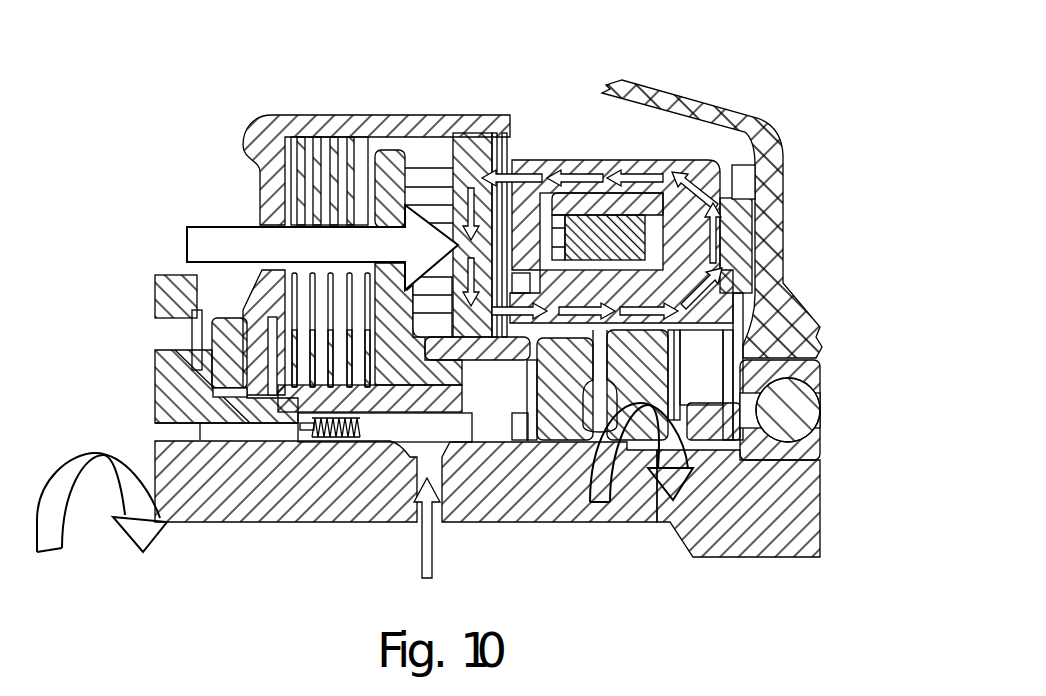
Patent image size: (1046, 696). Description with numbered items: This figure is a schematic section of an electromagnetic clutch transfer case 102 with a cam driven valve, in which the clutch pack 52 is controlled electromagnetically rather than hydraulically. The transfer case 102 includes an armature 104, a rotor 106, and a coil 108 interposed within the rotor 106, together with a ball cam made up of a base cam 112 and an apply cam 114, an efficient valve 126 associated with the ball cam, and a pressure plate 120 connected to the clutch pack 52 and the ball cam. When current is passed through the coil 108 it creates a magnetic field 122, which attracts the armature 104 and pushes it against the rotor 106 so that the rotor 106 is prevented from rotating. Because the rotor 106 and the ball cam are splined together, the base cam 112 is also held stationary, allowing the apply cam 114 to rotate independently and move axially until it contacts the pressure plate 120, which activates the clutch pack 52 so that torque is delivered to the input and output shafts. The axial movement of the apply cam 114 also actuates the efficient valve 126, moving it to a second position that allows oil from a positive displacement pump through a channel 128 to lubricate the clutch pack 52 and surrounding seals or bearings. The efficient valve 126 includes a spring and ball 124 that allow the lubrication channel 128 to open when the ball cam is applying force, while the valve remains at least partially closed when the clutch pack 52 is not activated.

The electromagnetic clutch transfer case 102 is at (700, 57).
The armature 104 is at (455, 150).
The rotor 106 is at (563, 160).
The clutch pack 52 is at (316, 185).
The coil 108 is at (650, 245).
The magnetic field 122 is at (745, 257).
The spring and ball 124 is at (350, 437).
The efficient valve 126 is at (390, 447).
The channel 128 is at (437, 487).
The pressure plate 120 is at (442, 368).
The apply cam 114 is at (563, 373).
The base cam 112 is at (665, 385).